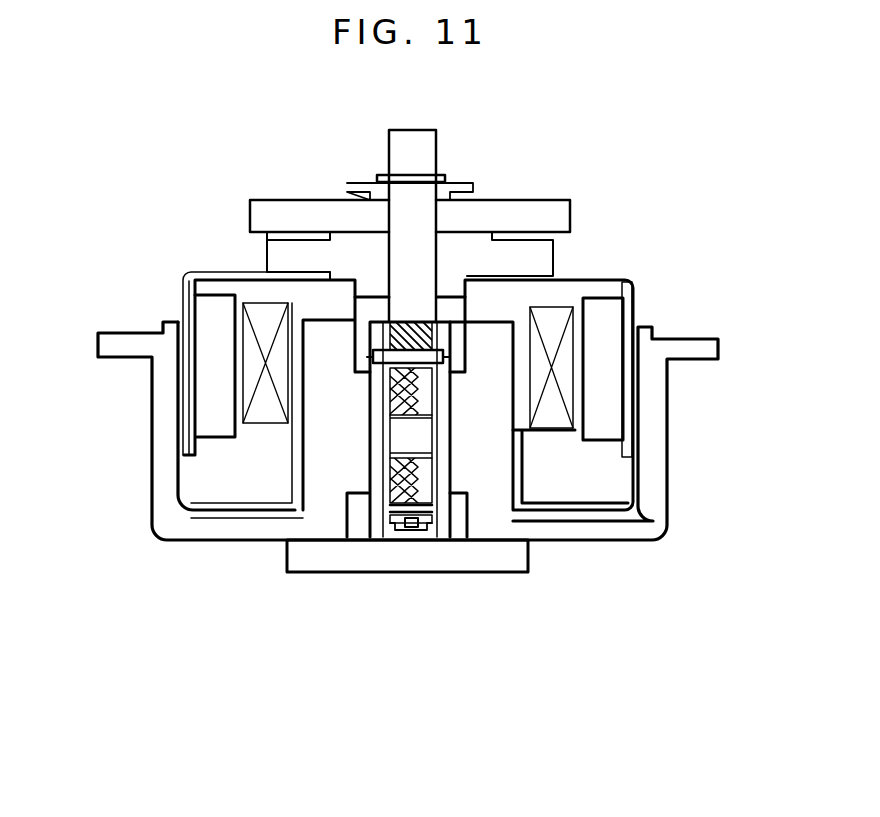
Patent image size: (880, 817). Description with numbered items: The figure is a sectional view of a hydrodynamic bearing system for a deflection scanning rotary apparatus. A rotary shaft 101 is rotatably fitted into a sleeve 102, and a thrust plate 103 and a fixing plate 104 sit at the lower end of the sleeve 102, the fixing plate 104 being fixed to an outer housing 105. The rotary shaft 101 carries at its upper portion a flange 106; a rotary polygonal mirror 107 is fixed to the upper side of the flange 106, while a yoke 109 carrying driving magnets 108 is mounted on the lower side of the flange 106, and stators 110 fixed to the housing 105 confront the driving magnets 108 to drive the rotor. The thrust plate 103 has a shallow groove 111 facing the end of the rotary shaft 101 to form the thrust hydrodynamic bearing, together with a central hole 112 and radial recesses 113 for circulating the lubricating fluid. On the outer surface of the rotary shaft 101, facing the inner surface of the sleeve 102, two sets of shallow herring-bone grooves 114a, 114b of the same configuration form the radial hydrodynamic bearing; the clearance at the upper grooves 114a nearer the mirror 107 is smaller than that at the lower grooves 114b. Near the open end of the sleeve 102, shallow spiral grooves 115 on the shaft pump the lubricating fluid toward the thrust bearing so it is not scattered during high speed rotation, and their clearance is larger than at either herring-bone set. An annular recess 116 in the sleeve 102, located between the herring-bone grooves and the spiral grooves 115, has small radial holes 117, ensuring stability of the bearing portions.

The rotary shaft 101 is at (425, 148).
The sleeve 102 is at (455, 517).
The thrust plate 103 is at (385, 525).
The fixing plate 104 is at (320, 558).
The outer housing 105 is at (316, 525).
The flange 106 is at (446, 245).
The rotary polygonal mirror 107 is at (535, 215).
The driving magnets 108 is at (607, 360).
The yoke 109 is at (634, 282).
The stators 110 is at (563, 396).
The shallow groove 111 is at (442, 527).
The central hole 112 is at (400, 524).
The radial recesses 113 is at (414, 527).
The shallow herring-bone grooves 114a is at (395, 392).
The shallow herring-bone grooves 114b is at (395, 486).
The shallow spiral grooves 115 is at (408, 332).
The annular recess 116 is at (450, 337).
The small radial holes 117 is at (446, 358).